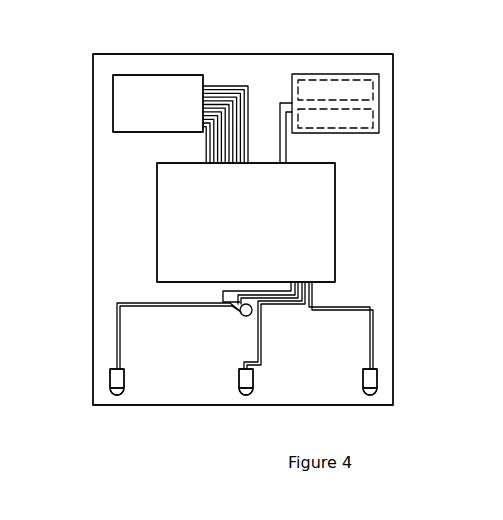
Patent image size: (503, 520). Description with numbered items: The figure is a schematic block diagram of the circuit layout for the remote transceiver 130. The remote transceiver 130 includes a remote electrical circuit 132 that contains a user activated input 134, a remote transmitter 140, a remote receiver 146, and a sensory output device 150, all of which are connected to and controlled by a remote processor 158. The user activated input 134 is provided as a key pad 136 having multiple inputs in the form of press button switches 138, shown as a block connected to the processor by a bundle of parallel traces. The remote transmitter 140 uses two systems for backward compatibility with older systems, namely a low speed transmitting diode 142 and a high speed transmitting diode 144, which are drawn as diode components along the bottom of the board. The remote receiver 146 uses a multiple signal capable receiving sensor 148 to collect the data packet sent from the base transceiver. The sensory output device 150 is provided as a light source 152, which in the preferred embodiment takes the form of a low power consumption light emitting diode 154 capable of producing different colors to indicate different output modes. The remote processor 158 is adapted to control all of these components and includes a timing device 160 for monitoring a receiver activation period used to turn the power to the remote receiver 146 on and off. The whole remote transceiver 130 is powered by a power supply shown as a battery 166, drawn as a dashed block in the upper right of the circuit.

The remote transceiver 130 is at (92, 172).
The remote electrical circuit 132 is at (256, 54).
The user activated input 134 is at (122, 75).
The key pad 136 is at (166, 75).
The press button switches 138 is at (188, 75).
The battery 166 is at (331, 74).
The remote processor 158 is at (336, 212).
The timing device 160 is at (337, 241).
The sensory output device 150 is at (240, 311).
The light source 152 is at (243, 316).
The light emitting diode 154 is at (232, 303).
The receiving sensor 148 is at (253, 378).
The low speed transmitting diode 142 is at (377, 382).
The high speed transmitting diode 144 is at (110, 383).
The remote receiver 146 is at (238, 385).
The remote transmitter 140 is at (360, 388).